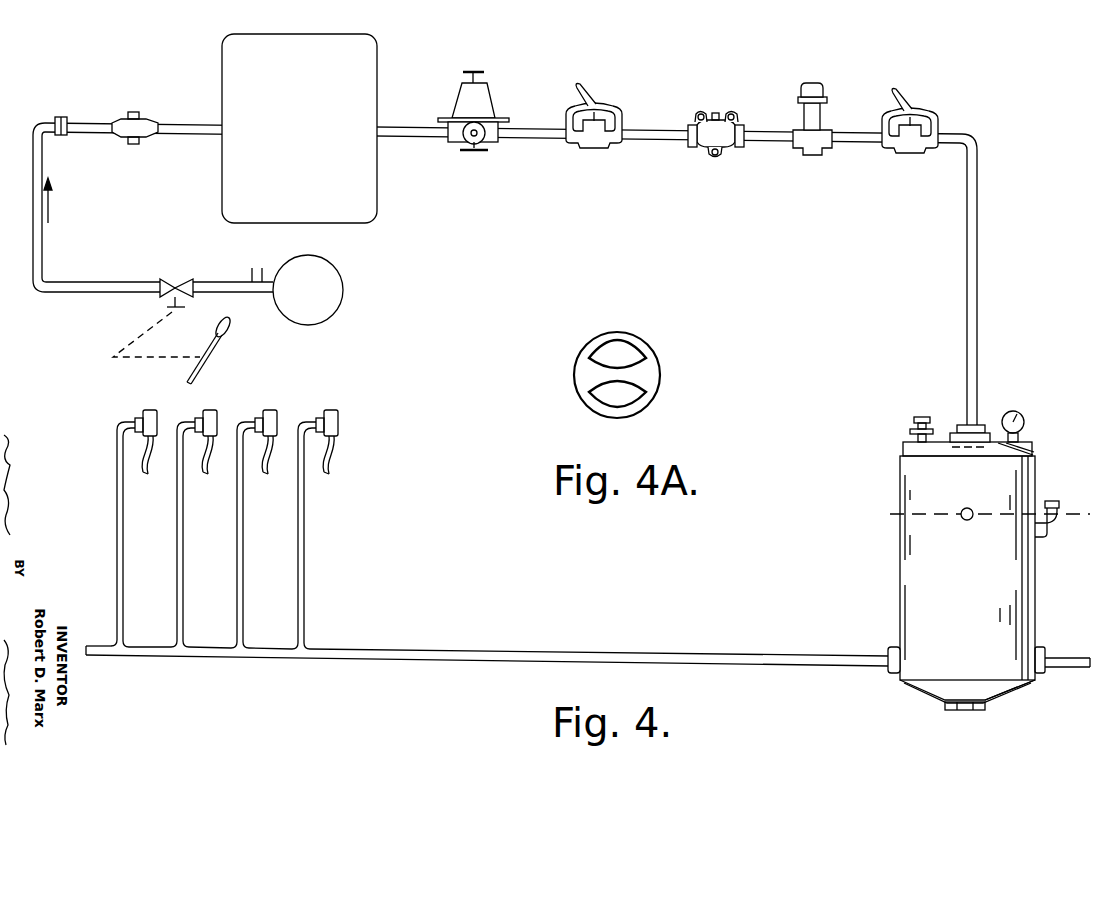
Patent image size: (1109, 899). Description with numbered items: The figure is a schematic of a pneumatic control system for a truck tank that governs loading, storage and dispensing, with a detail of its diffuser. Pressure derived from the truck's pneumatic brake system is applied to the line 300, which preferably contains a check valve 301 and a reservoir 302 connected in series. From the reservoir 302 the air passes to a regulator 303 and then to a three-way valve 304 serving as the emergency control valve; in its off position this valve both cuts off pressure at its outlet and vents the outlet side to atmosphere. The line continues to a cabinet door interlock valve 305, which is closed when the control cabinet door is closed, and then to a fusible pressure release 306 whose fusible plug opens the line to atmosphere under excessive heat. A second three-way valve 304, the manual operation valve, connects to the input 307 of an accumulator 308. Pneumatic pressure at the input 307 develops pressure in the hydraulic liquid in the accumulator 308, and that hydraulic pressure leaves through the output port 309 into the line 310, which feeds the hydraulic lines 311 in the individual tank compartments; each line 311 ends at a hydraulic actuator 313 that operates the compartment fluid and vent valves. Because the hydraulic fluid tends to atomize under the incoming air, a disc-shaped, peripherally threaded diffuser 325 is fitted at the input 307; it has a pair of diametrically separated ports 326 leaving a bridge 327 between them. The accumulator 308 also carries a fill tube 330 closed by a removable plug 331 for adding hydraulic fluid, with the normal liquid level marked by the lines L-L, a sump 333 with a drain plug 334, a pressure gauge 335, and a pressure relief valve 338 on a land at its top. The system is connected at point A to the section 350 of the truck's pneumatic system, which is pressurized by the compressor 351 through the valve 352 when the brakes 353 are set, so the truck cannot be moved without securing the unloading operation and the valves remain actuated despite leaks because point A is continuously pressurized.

In FIG. 4, the line 300 is at (87, 120).
In FIG. 4, the check valve 301 is at (140, 118).
In FIG. 4, the reservoir 302 is at (378, 64).
In FIG. 4, the regulator 303 is at (487, 145).
In FIG. 4, the three-way valve 304 is at (610, 108).
In FIG. 4, the cabinet door interlock valve 305 is at (724, 153).
In FIG. 4, the fusible pressure release 306 is at (825, 108).
In FIG. 4, the input 307 is at (978, 425).
In FIG. 4, the accumulator 308 is at (1037, 476).
In FIG. 4, the output port 309 is at (888, 656).
In FIG. 4, the line 310 is at (600, 652).
In FIG. 4, the hydraulic lines 311 is at (298, 525).
In FIG. 4, the hydraulic actuator 313 is at (327, 406).
In FIG. 4, the diffuser 325 is at (948, 435).
In FIG. 4A, the diffuser 325 is at (638, 375).
In FIG. 4A, the ports 326 is at (628, 352).
In FIG. 4A, the bridge 327 is at (645, 372).
In FIG. 4, the fill tube 330 is at (1050, 531).
In FIG. 4, the plug 331 is at (1056, 503).
In FIG. 4, the sump 333 is at (990, 698).
In FIG. 4, the drain plug 334 is at (965, 711).
In FIG. 4, the pressure gauge 335 is at (1025, 419).
In FIG. 4, the pressure relief valve 338 is at (912, 418).
In FIG. 4, the section 350 is at (40, 247).
In FIG. 4, the compressor 351 is at (338, 312).
In FIG. 4, the valve 352 is at (172, 278).
In FIG. 4, the brakes 353 is at (232, 333).